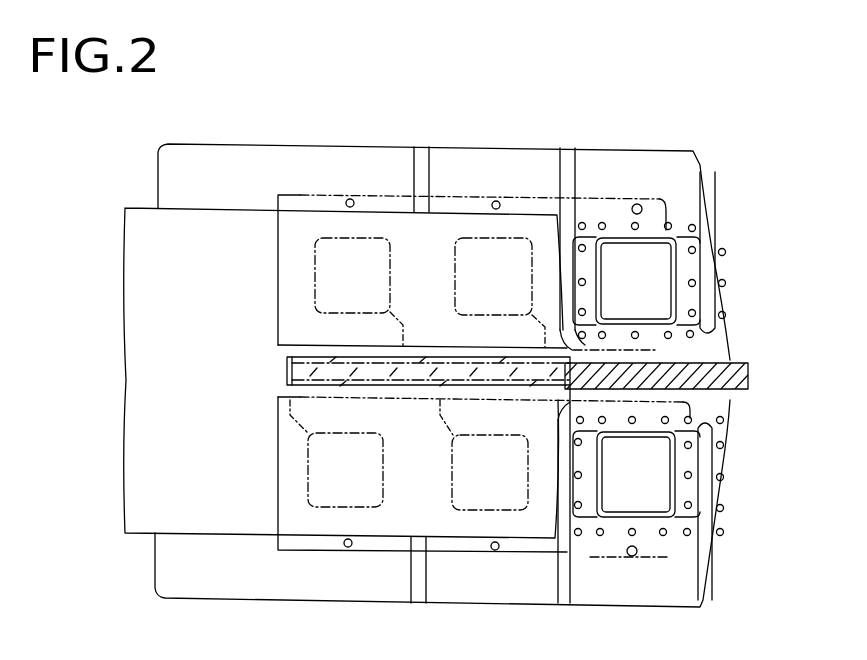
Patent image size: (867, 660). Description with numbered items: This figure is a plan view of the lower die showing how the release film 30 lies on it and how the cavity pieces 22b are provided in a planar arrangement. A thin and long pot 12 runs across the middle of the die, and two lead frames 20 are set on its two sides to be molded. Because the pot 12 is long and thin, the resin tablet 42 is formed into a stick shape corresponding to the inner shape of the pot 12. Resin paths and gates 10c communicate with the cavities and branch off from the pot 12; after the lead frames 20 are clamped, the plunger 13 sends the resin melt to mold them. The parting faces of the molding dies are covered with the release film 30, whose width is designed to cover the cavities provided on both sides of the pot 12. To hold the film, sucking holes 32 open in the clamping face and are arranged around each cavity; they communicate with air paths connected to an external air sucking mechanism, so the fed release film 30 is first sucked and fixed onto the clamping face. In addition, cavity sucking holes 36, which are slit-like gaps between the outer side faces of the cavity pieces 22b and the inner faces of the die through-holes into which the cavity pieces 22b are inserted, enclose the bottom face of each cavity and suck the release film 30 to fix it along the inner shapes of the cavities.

The resin paths and gates 10c is at (397, 323).
The pot 12 is at (700, 362).
The plunger 13 is at (748, 379).
The lead frame 20 is at (300, 195).
The cavity piece 22b is at (668, 242).
The release film 30 is at (147, 261).
The sucking hole 32 is at (692, 283).
The cavity sucking hole 36 is at (664, 298).
The resin tablet 42 is at (300, 380).